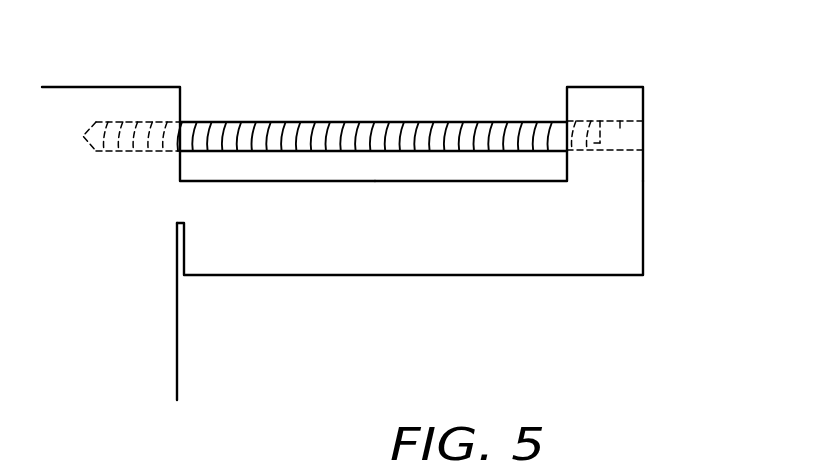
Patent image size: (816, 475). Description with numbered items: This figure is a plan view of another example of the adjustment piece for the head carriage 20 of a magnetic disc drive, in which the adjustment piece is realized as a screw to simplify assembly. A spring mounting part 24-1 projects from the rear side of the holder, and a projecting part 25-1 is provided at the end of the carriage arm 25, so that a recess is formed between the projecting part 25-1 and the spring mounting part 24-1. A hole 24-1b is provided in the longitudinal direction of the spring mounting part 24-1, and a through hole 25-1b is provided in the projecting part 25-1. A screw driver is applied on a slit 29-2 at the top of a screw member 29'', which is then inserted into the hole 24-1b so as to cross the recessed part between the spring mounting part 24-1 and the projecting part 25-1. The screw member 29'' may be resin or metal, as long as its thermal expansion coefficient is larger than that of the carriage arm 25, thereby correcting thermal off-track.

The head carriage 20 is at (166, 333).
The spring mounting part 24-1 is at (128, 87).
The hole 24-1b is at (133, 120).
The carriage arm 25 is at (419, 262).
The projecting part 25-1 is at (617, 87).
The through hole 25-1b is at (621, 120).
The screw member 29'' is at (373, 110).
The slit 29-2 is at (600, 136).